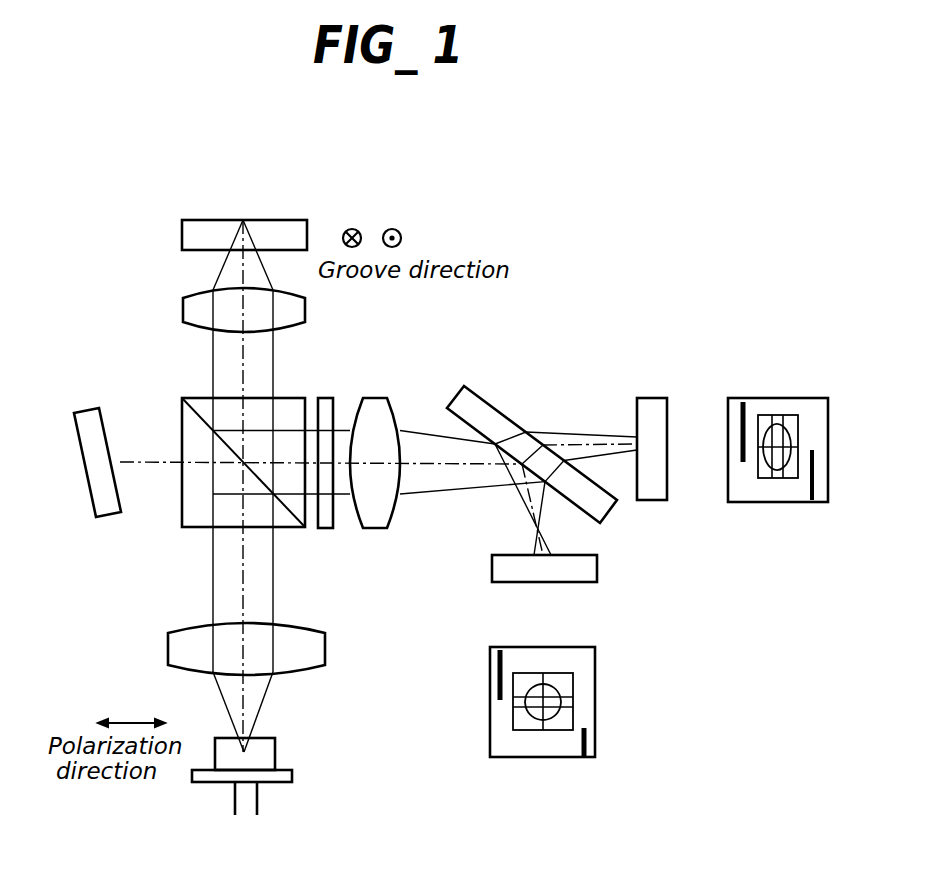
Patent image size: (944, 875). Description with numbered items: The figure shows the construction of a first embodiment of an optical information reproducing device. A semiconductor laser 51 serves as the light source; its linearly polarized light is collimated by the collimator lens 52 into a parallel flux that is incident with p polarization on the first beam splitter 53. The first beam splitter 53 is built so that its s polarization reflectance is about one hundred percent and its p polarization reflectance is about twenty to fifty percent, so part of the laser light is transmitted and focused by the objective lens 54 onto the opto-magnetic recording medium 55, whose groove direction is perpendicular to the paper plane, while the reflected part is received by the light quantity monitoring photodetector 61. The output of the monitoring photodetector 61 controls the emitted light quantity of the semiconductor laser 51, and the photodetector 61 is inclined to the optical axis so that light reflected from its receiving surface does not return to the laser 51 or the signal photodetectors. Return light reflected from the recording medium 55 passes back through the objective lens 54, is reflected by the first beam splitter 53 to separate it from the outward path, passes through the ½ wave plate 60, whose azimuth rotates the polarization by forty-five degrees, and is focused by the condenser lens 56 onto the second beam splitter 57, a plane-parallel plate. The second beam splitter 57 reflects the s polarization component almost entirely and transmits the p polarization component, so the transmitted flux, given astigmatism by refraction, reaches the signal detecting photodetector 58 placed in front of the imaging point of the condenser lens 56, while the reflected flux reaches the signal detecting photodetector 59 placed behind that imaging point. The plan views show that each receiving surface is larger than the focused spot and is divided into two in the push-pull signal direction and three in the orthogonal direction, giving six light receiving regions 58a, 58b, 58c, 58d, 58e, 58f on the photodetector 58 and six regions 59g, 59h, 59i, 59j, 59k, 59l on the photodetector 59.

The semiconductor laser 51 is at (275, 750).
The collimator lens 52 is at (170, 648).
The first beam splitter 53 is at (188, 510).
The objective lens 54 is at (190, 312).
The opto-magnetic recording medium 55 is at (188, 236).
The condenser lens 56 is at (383, 398).
The second beam splitter 57 is at (488, 402).
The signal detecting photodetector 58 is at (652, 398).
The light receiving region 58a is at (762, 415).
The light receiving region 58b is at (775, 415).
The light receiving region 58c is at (792, 415).
The light receiving region 58d is at (790, 478).
The light receiving region 58e is at (777, 478).
The light receiving region 58f is at (762, 478).
The signal detecting photodetector 59 is at (597, 565).
The light receiving region 59g is at (518, 682).
The light receiving region 59h is at (518, 705).
The light receiving region 59i is at (518, 718).
The light receiving region 59j is at (565, 718).
The light receiving region 59k is at (565, 703).
The light receiving region 59l is at (565, 683).
The ½ wave plate 60 is at (325, 528).
The light quantity monitoring photodetector 61 is at (103, 518).